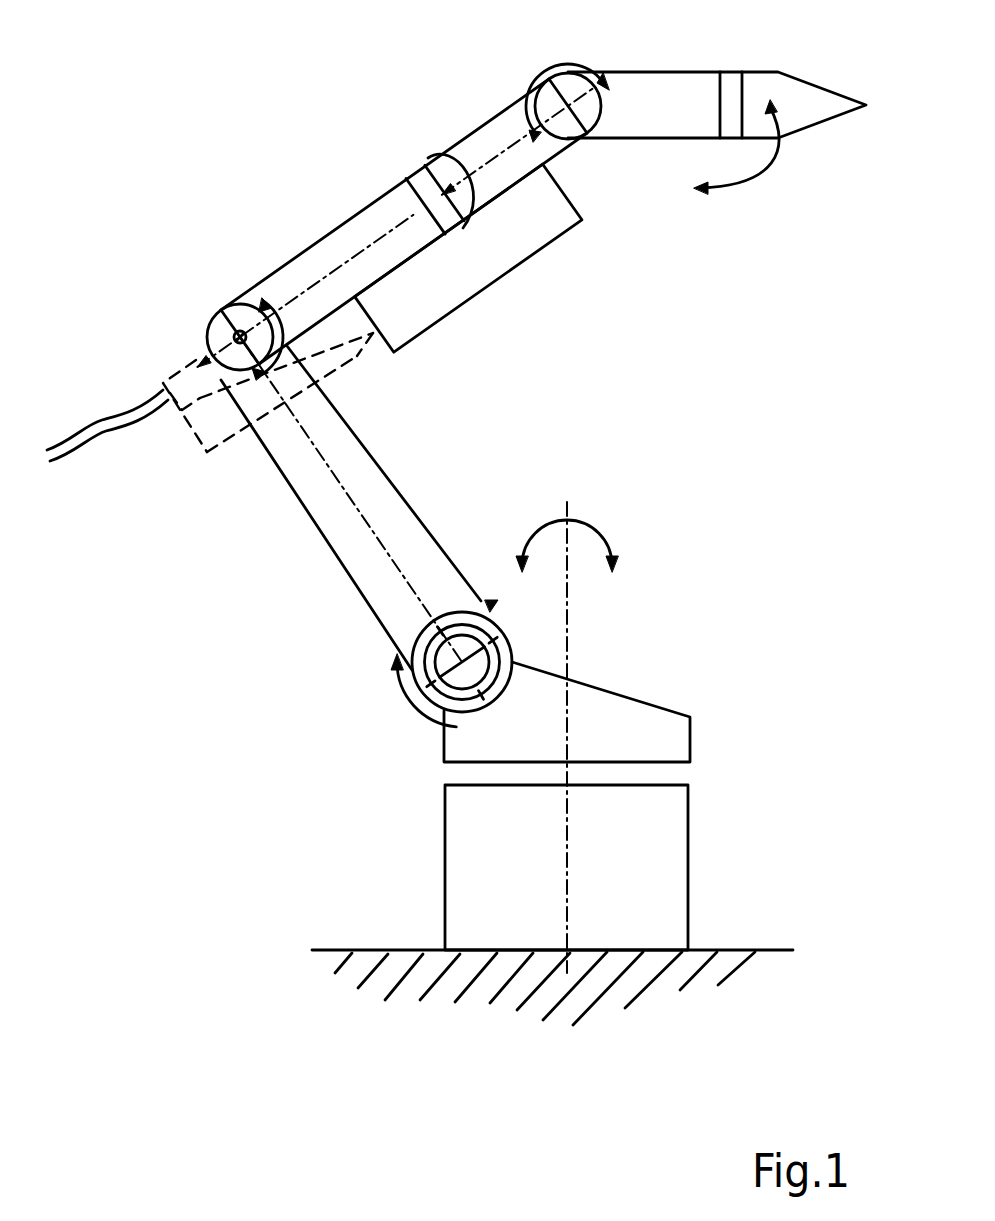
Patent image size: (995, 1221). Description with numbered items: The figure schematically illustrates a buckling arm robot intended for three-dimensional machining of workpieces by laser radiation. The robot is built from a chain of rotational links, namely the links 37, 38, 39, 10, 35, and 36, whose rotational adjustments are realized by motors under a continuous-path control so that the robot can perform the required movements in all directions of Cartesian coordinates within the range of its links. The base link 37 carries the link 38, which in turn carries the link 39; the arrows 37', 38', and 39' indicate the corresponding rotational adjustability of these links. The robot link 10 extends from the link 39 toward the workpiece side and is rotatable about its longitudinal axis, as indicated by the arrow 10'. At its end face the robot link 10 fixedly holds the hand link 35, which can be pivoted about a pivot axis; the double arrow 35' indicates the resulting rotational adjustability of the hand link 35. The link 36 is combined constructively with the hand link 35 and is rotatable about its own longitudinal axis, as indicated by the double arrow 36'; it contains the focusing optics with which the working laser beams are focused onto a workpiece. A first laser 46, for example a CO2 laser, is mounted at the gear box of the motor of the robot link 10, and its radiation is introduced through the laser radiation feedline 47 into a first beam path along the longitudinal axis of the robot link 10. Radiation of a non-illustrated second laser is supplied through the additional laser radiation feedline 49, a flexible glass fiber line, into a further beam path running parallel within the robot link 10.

The robot link 10 is at (395, 223).
The rotational adjustability of robot link 10' is at (413, 164).
The hand link 35 is at (602, 139).
The double arrow 35' is at (591, 72).
The link 36 is at (717, 69).
The double arrow 36' is at (773, 161).
The link 37 is at (617, 867).
The rotational adjustability of link 37 37' is at (594, 724).
The link 38 is at (423, 694).
The rotational adjustability of link 38 38' is at (373, 690).
The link 39 is at (207, 326).
The rotational adjustability of link 39 39' is at (161, 422).
The first laser 46 is at (458, 298).
The laser radiation feedline 47 is at (350, 355).
The additional laser radiation feedline 49 is at (87, 437).